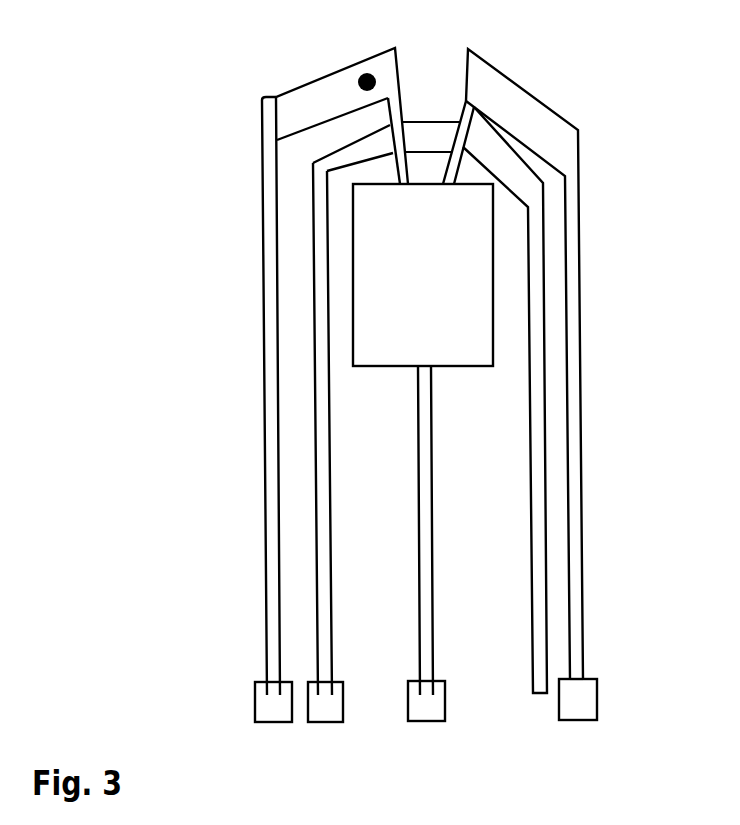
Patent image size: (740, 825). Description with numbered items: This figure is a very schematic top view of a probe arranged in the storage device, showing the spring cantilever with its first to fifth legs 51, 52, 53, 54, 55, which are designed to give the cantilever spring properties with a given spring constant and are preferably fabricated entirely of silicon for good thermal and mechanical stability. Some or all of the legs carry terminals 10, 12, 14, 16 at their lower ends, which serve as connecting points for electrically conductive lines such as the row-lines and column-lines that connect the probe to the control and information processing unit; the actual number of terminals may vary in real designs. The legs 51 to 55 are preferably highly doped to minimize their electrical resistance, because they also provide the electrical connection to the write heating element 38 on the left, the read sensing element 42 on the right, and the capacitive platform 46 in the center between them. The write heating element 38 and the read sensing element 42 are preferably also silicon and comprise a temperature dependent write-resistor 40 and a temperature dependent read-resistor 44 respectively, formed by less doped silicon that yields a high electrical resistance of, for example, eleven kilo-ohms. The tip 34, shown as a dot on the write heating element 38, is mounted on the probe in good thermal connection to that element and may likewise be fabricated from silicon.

The terminal 10 is at (268, 721).
The terminal 12 is at (324, 721).
The terminal 14 is at (425, 720).
The terminal 16 is at (575, 719).
The tip 34 is at (364, 76).
The write heating element 38 is at (290, 67).
The write-resistor 40 is at (283, 110).
The read sensing element 42 is at (520, 65).
The read-resistor 44 is at (537, 101).
The capacitive platform 46 is at (473, 273).
The first leg 51 is at (264, 460).
The second leg 52 is at (331, 452).
The third leg 53 is at (418, 593).
The fourth leg 54 is at (532, 452).
The fifth leg 55 is at (584, 452).